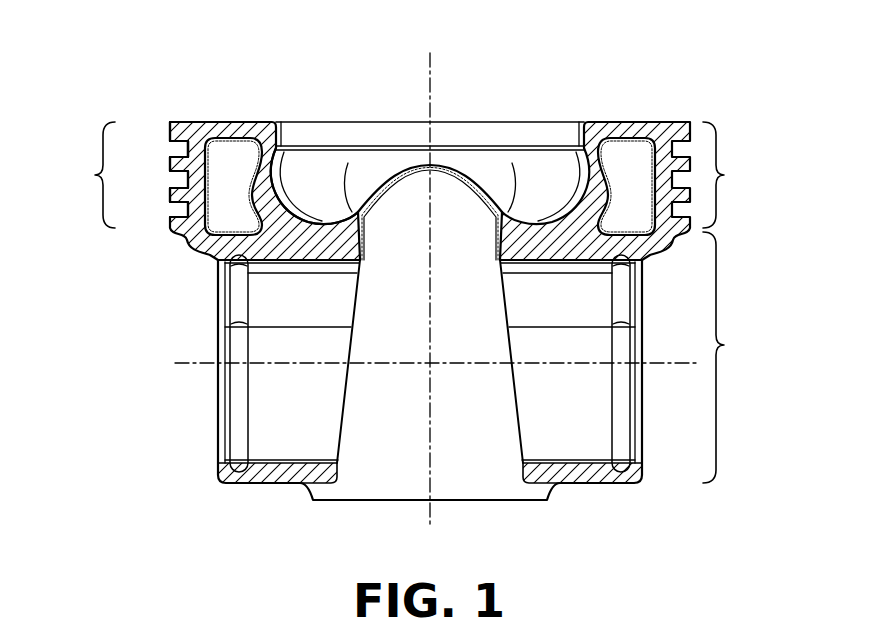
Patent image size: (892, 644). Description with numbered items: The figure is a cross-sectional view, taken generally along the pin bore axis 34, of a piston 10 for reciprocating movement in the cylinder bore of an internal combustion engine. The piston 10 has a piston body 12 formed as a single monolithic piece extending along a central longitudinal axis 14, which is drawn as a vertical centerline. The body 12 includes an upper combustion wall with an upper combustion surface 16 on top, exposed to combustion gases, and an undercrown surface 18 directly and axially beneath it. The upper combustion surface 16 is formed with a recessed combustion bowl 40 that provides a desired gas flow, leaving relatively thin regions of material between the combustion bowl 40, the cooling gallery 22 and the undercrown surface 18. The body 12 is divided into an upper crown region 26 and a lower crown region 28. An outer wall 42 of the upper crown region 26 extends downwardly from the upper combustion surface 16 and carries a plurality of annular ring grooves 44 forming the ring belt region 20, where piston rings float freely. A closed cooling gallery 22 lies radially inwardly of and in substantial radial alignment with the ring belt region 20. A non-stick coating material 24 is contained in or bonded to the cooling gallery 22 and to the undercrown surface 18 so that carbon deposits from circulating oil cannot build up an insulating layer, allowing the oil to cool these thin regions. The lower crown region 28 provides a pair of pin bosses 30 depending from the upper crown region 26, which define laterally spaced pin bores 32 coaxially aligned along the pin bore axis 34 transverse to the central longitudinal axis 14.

The piston 10 is at (730, 106).
The piston body 12 is at (667, 130).
The central longitudinal axis 14 is at (432, 69).
The upper combustion surface 16 is at (504, 198).
The undercrown surface 18 is at (410, 195).
The ring belt region 20 is at (121, 175).
The cooling gallery 22 is at (632, 163).
The non-stick coating material 24 is at (212, 168).
The upper crown region 26 is at (731, 175).
The lower crown region 28 is at (731, 357).
The pin bosses 30 is at (252, 485).
The pin bores 32 is at (268, 428).
The pin bore axis 34 is at (185, 360).
The combustion bowl 40 is at (362, 172).
The outer wall 42 is at (170, 141).
The annular ring groove 44 is at (186, 150).